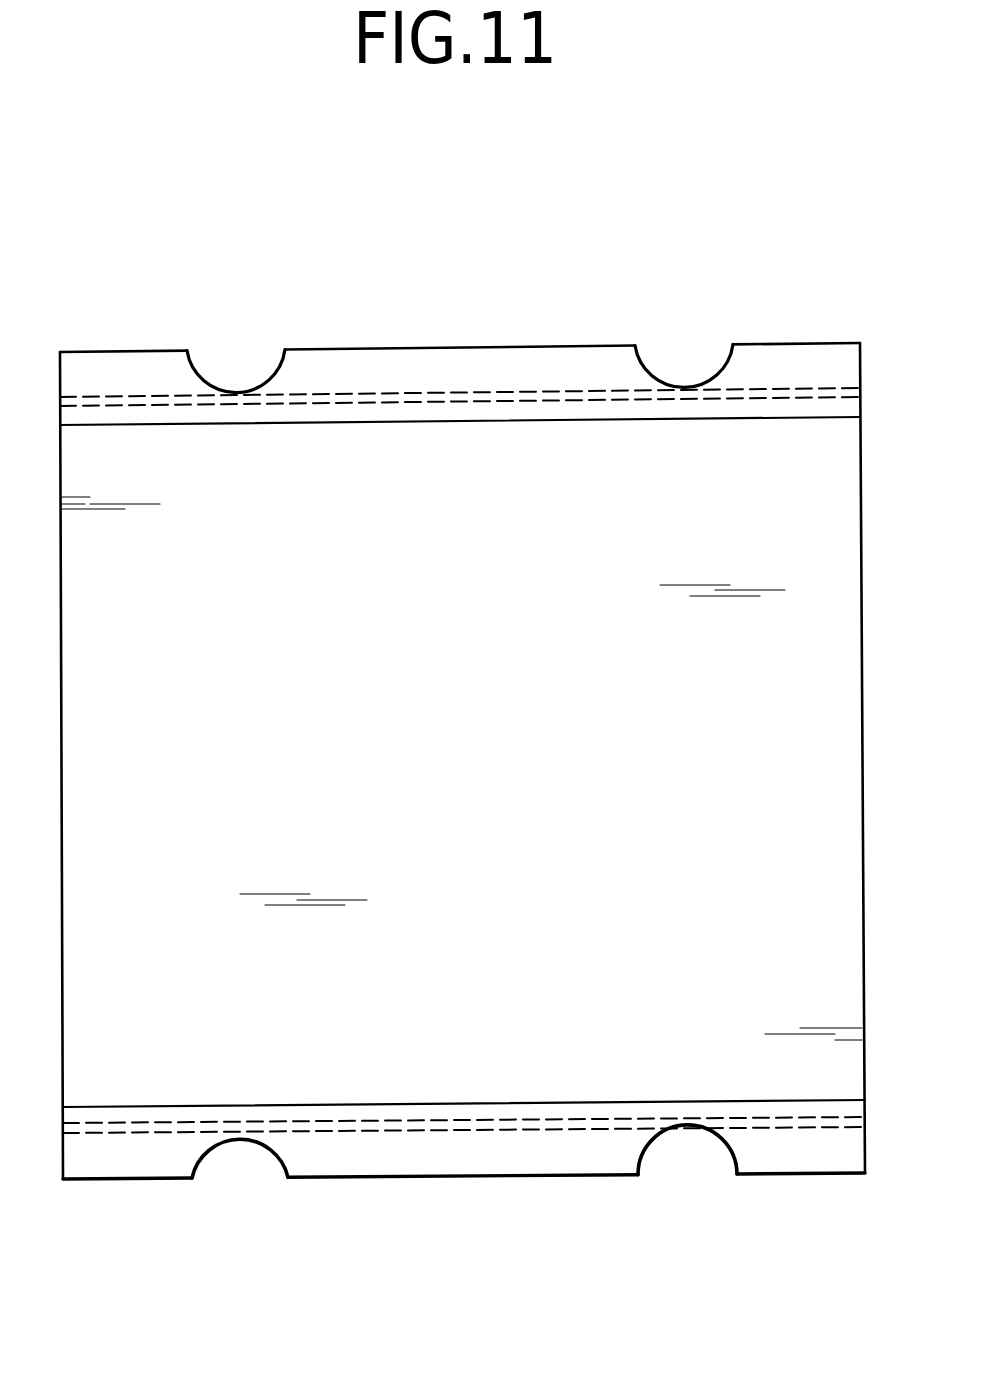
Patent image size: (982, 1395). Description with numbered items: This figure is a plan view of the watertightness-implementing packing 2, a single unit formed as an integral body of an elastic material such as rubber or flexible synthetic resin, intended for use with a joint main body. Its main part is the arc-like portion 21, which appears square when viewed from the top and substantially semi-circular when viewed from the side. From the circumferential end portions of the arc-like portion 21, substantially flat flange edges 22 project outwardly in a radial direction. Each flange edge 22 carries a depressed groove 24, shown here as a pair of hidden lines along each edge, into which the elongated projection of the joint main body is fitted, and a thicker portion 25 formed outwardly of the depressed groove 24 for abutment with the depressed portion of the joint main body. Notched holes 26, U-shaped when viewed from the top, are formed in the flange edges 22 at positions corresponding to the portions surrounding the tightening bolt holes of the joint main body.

The watertightness-implementing packing 2 is at (395, 252).
The arc-like portion 21 is at (433, 440).
The flange edge 22 is at (507, 368).
The depressed groove 24 is at (128, 397).
The thicker portion 25 is at (538, 1147).
The notched hole 26 is at (683, 365).